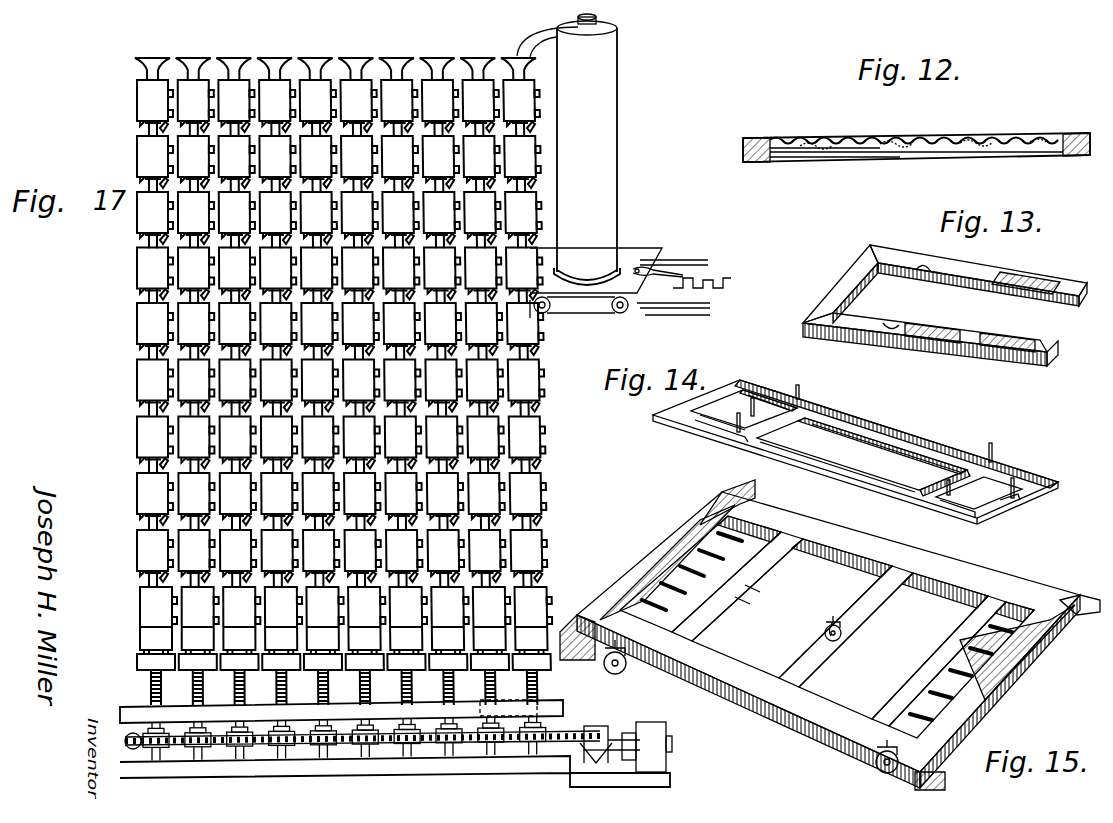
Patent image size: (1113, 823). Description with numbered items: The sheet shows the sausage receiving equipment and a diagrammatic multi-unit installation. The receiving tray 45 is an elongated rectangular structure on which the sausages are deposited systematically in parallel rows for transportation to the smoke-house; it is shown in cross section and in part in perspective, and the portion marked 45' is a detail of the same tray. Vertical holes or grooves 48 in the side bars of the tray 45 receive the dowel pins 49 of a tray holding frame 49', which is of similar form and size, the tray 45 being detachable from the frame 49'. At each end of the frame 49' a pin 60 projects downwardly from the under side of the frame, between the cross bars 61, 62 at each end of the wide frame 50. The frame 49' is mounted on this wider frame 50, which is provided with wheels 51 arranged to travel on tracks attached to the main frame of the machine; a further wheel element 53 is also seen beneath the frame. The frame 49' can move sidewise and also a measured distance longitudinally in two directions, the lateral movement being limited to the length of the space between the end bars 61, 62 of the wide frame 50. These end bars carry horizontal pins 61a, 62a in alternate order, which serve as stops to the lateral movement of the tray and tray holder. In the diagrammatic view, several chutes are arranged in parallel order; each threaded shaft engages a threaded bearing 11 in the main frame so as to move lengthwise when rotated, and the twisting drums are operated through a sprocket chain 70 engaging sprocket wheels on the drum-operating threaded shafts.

In FIG. 17, the threaded bearing 11 is at (525, 706).
In FIG. 17, the sprocket chain 70 is at (510, 745).
In FIG. 12, the receiving tray 45 is at (916, 133).
In FIG. 13, the receiving tray 45 is at (953, 305).
In FIG. 13, the notch in frame bar 45' is at (909, 285).
In FIG. 13, the vertical holes or grooves 48 is at (895, 325).
In FIG. 14, the dowel pins 49 is at (882, 438).
In FIG. 14, the tray holding frame 49' is at (855, 452).
In FIG. 14, the pin 60 is at (740, 437).
In FIG. 15, the wide frame 50 is at (830, 714).
In FIG. 15, the wheels 51 is at (620, 690).
In FIG. 15, the caster 53 is at (840, 640).
In FIG. 15, the cross bar 61 is at (700, 530).
In FIG. 15, the horizontal pins 61a is at (650, 603).
In FIG. 15, the cross bar 62 is at (735, 590).
In FIG. 15, the horizontal pins 62a is at (690, 608).